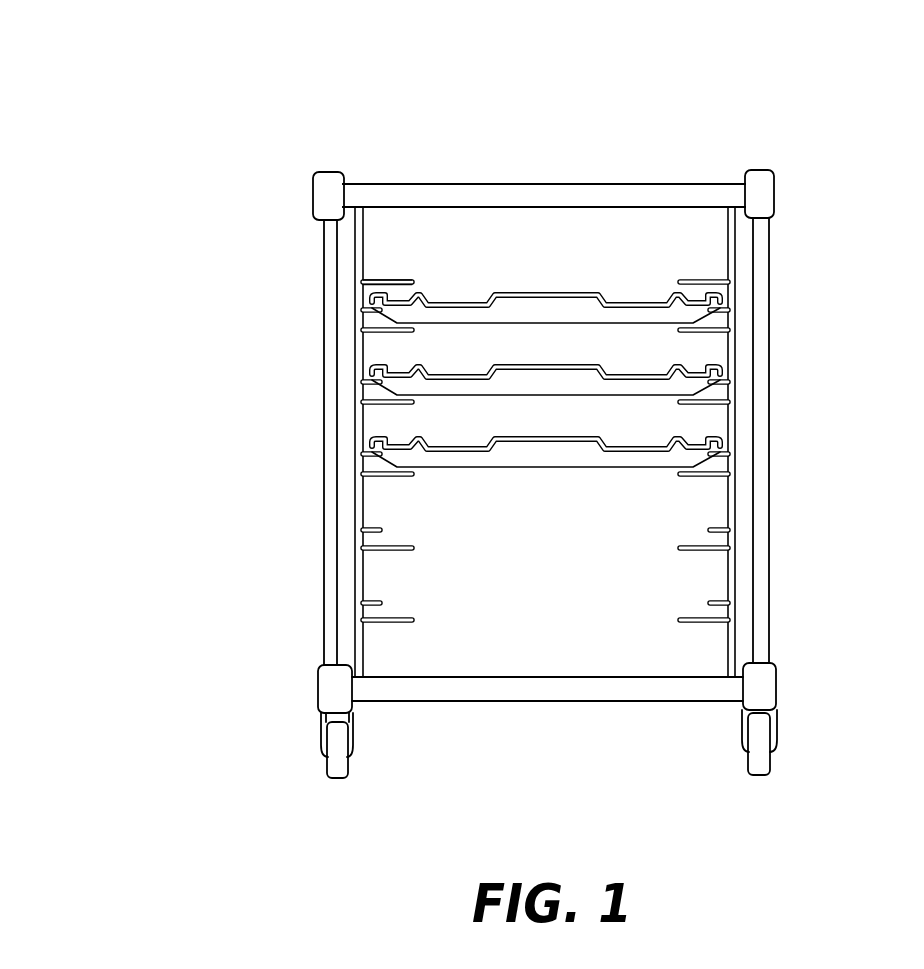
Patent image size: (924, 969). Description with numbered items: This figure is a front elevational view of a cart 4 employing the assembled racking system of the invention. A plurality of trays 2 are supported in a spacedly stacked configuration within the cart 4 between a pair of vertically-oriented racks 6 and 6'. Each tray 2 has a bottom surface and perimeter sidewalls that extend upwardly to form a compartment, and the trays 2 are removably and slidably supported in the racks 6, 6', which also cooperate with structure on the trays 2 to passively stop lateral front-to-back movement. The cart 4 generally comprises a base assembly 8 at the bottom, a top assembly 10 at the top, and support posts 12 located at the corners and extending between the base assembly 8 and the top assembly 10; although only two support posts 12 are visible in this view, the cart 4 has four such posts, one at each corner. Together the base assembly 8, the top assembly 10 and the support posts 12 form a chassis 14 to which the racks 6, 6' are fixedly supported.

The tray 2 is at (657, 292).
The cart 4 is at (198, 250).
The rack 6 is at (615, 451).
The rack 6' is at (320, 404).
The base assembly 8 is at (697, 729).
The top assembly 10 is at (697, 160).
The support post 12 is at (328, 580).
The chassis 14 is at (575, 122).